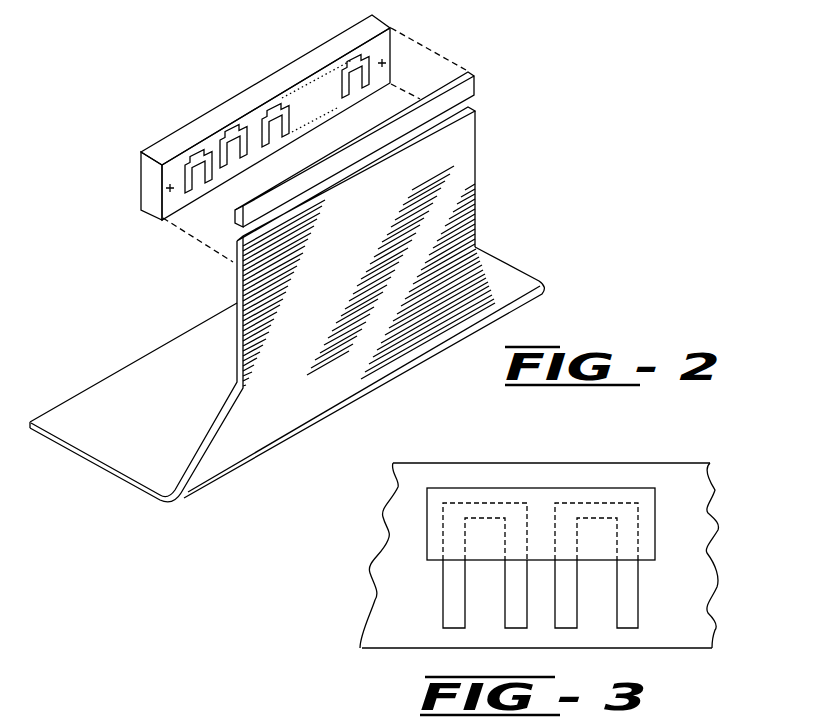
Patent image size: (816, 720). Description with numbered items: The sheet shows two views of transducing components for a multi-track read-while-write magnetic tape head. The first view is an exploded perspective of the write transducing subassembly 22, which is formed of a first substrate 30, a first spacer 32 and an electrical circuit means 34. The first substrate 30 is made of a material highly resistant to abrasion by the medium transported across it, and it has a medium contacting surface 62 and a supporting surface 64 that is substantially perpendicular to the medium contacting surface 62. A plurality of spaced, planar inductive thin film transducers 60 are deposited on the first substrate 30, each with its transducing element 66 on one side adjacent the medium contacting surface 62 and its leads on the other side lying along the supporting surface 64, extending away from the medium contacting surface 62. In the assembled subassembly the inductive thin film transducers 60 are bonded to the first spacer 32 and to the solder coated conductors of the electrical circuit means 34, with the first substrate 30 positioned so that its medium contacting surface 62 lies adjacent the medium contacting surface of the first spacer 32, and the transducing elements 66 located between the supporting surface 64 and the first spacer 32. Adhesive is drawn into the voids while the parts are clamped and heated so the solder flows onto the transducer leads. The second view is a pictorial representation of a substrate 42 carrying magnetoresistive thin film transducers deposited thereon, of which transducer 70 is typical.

In FIG. 2, the write transducing subassembly 22 is at (518, 30).
In FIG. 2, the first substrate 30 is at (388, 50).
In FIG. 2, the first spacer 32 is at (469, 93).
In FIG. 2, the electrical circuit means 34 is at (470, 232).
In FIG. 3, the substrate 42 is at (682, 482).
In FIG. 2, the inductive thin film transducers 60 is at (184, 173).
In FIG. 3, the inductive thin film transducers 60 is at (100, 710).
In FIG. 2, the medium contacting surface 62 is at (332, 47).
In FIG. 3, the medium contacting surface 62 is at (260, 710).
In FIG. 3, the supporting surface 64 is at (320, 710).
In FIG. 3, the transducing elements 66 is at (29, 710).
In FIG. 3, the transducer 70 is at (608, 505).